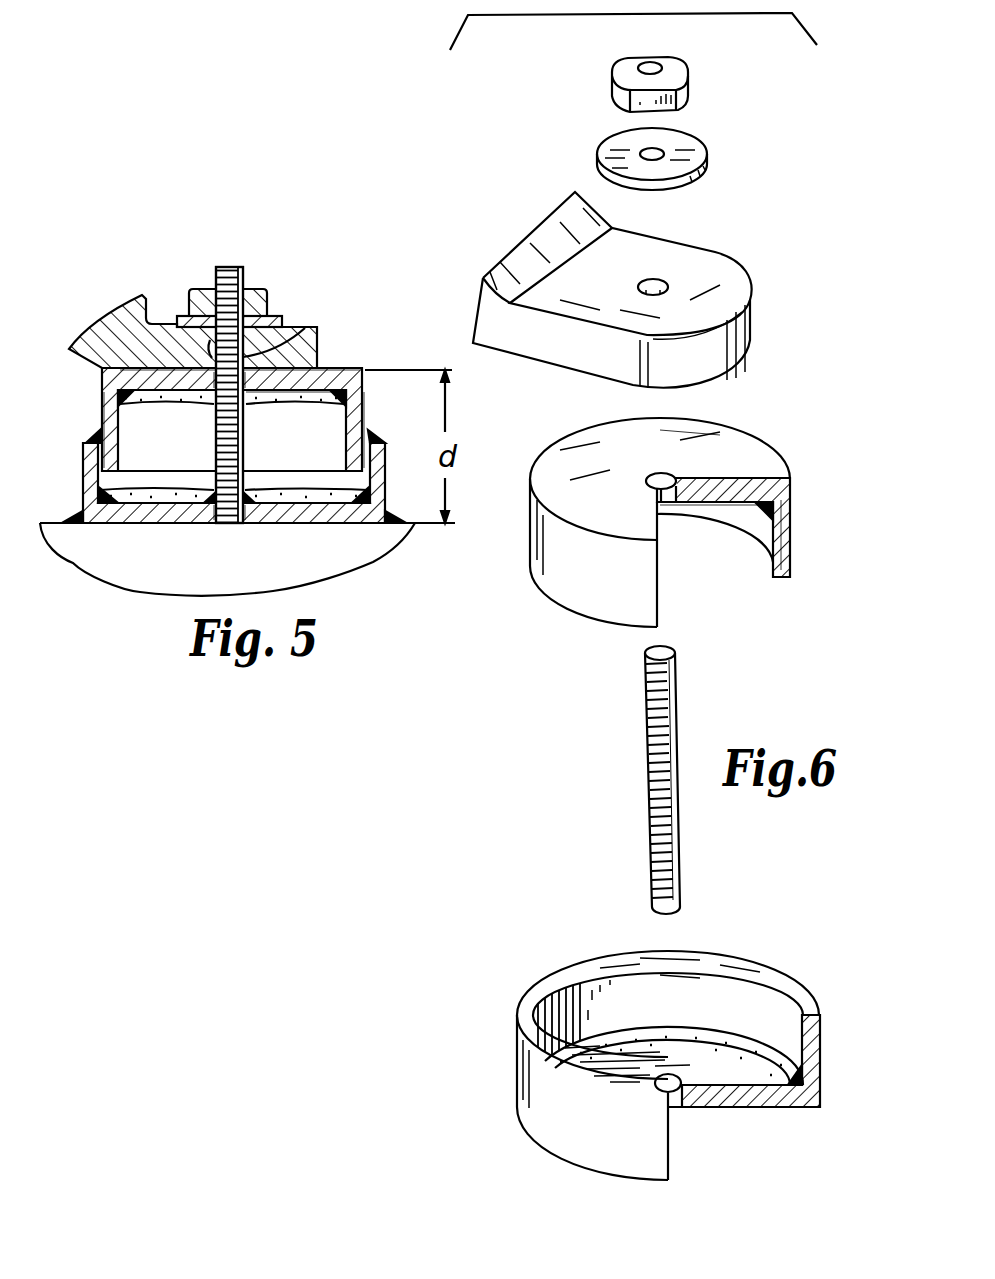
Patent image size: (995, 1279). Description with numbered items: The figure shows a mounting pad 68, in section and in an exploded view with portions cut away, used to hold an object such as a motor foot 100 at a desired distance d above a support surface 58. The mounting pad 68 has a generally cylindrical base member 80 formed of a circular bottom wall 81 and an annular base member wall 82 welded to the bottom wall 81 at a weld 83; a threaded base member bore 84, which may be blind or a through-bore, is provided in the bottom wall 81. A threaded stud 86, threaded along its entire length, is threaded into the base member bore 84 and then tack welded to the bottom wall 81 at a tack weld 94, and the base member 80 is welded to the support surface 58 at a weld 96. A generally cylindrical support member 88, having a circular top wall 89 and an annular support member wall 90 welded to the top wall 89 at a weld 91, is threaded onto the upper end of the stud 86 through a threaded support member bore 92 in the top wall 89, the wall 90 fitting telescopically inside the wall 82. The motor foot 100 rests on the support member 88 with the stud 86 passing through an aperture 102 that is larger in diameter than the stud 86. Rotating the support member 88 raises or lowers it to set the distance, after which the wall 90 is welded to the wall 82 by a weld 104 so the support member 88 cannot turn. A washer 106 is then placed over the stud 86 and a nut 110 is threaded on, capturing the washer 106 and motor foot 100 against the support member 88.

In FIG. 5, the support surface 58 is at (158, 517).
In FIG. 5, the mounting pad 68 is at (133, 281).
In FIG. 6, the mounting pad 68 is at (858, 637).
In FIG. 5, the base member 80 is at (72, 486).
In FIG. 6, the base member 80 is at (843, 1046).
In FIG. 5, the bottom wall 81 is at (317, 510).
In FIG. 6, the bottom wall 81 is at (703, 1045).
In FIG. 5, the annular base member wall 82 is at (378, 465).
In FIG. 6, the annular base member wall 82 is at (793, 998).
In FIG. 5, the weld 83 is at (367, 492).
In FIG. 6, the weld 83 is at (633, 1033).
In FIG. 5, the base member bore 84 is at (262, 520).
In FIG. 6, the base member bore 84 is at (672, 1095).
In FIG. 5, the threaded stud 86 is at (216, 452).
In FIG. 6, the threaded stud 86 is at (680, 696).
In FIG. 5, the support member 88 is at (84, 372).
In FIG. 6, the support member 88 is at (802, 496).
In FIG. 5, the top wall 89 is at (240, 404).
In FIG. 6, the top wall 89 is at (700, 437).
In FIG. 5, the annular support member wall 90 is at (102, 391).
In FIG. 6, the annular support member wall 90 is at (788, 548).
In FIG. 5, the weld 91 is at (295, 418).
In FIG. 6, the weld 91 is at (773, 506).
In FIG. 5, the support member bore 92 is at (251, 408).
In FIG. 6, the support member bore 92 is at (663, 476).
In FIG. 5, the tack weld 94 is at (205, 498).
In FIG. 5, the weld 96 is at (387, 515).
In FIG. 5, the motor foot 100 is at (300, 351).
In FIG. 6, the motor foot 100 is at (750, 322).
In FIG. 5, the aperture 102 is at (258, 351).
In FIG. 6, the aperture 102 is at (650, 282).
In FIG. 5, the weld 104 is at (365, 435).
In FIG. 5, the washer 106 is at (280, 318).
In FIG. 6, the washer 106 is at (698, 154).
In FIG. 5, the nut 110 is at (251, 290).
In FIG. 6, the nut 110 is at (690, 94).